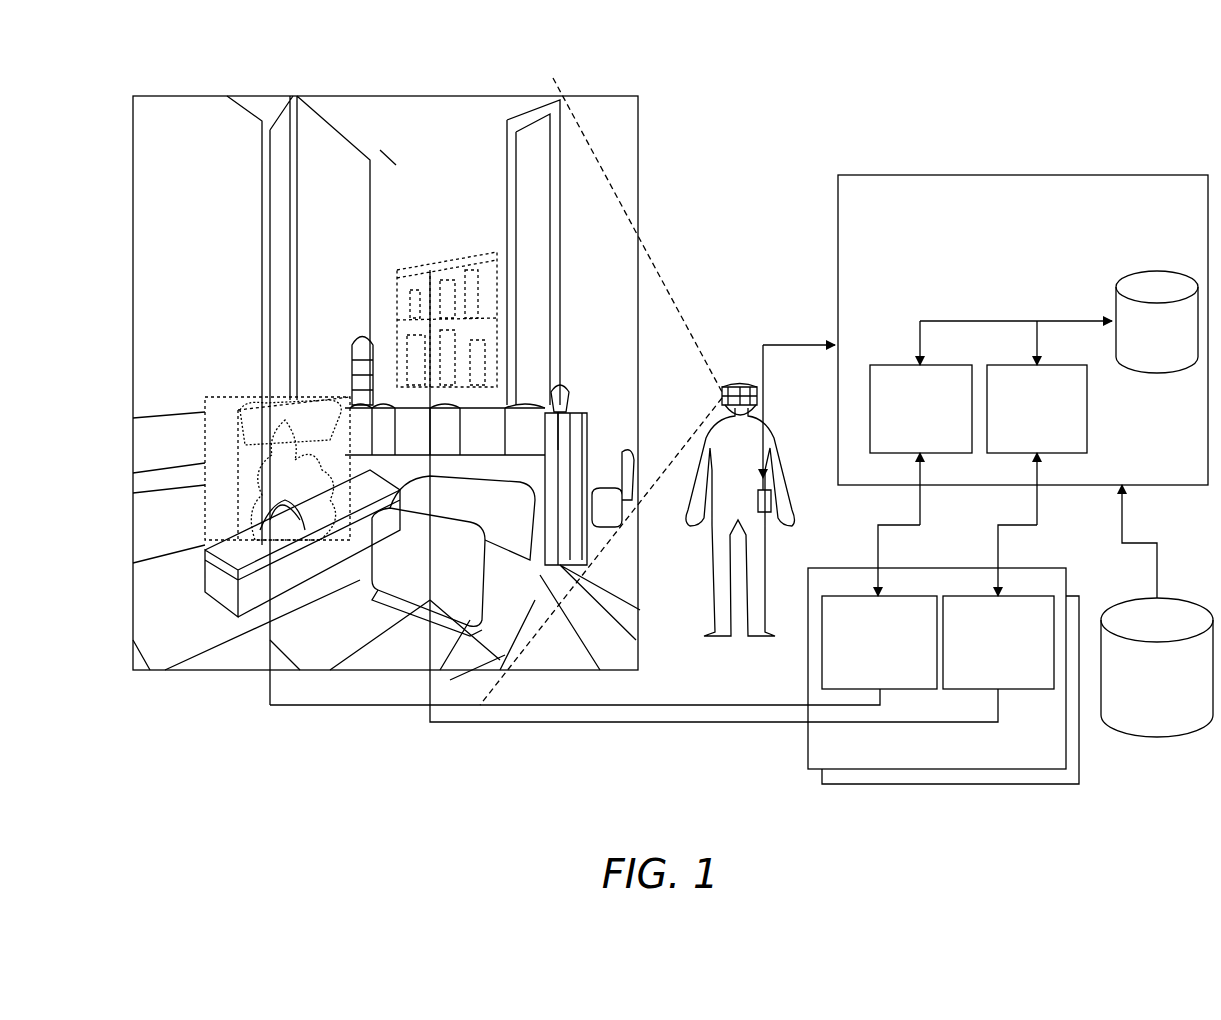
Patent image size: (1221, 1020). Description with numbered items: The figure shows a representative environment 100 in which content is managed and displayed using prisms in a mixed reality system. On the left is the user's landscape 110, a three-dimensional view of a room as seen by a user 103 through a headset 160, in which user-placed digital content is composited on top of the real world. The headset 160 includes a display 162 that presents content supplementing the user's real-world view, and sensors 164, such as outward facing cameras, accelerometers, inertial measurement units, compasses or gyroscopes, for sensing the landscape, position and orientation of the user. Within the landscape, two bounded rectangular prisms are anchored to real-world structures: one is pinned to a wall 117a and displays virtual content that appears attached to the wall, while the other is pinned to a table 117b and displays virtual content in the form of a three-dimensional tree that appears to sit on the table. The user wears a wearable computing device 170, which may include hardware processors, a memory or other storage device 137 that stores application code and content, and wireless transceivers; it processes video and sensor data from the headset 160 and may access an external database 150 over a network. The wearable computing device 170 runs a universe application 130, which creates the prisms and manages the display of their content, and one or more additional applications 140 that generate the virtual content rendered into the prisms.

The representative environment 100 is at (182, 58).
The user 103 is at (708, 532).
The user's landscape 110 is at (415, 96).
The wall 117a is at (395, 162).
The table 117b is at (205, 572).
The universe application 130 is at (1030, 175).
The memory or other storage device 137 is at (1160, 375).
The application 140 is at (808, 742).
The external database 150 is at (1150, 738).
The headset 160 is at (722, 394).
The display 162 is at (738, 388).
The sensors 164 is at (757, 394).
The wearable computing device 170 is at (778, 494).